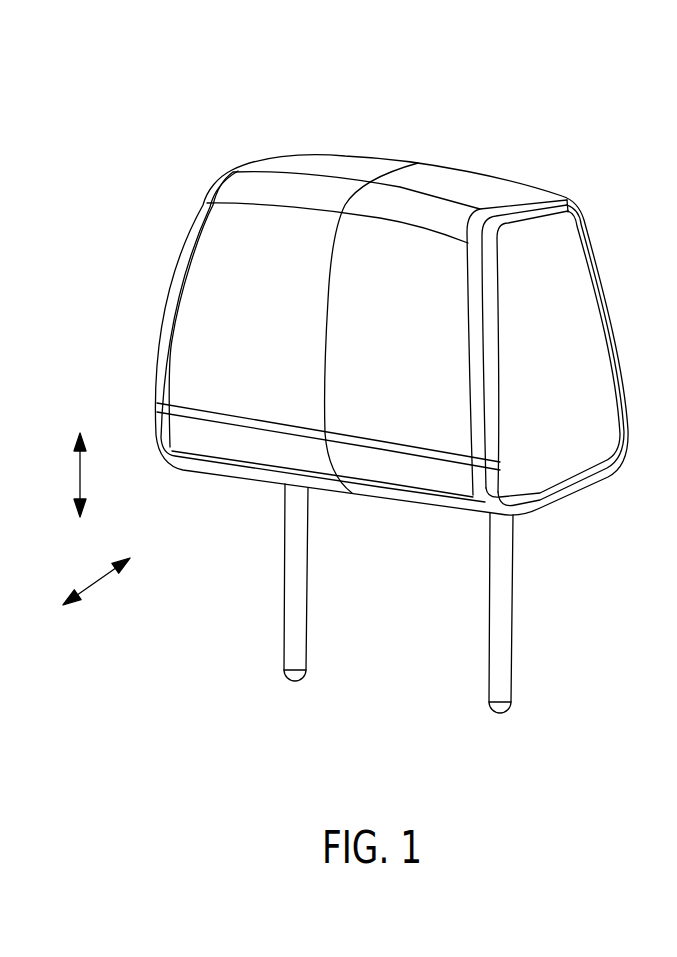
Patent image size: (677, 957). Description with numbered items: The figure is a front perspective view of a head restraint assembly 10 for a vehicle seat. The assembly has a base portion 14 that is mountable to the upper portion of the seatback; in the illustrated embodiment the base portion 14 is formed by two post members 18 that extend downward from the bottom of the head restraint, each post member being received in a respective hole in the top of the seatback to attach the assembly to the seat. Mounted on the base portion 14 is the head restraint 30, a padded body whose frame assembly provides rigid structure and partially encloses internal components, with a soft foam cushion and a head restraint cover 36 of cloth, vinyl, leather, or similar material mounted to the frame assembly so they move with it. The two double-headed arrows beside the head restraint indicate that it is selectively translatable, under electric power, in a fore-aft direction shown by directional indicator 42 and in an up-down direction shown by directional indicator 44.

The head restraint assembly 10 is at (364, 389).
The base portion 14 is at (387, 598).
The post members 18 is at (295, 565).
The head restraint 30 is at (400, 250).
The head restraint cover 36 is at (217, 340).
The directional indicator 42 is at (97, 583).
The directional indicator 44 is at (82, 472).